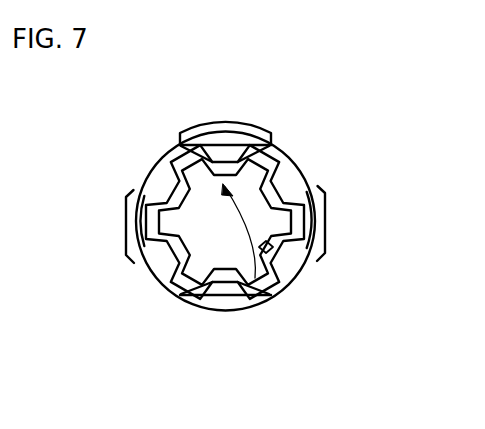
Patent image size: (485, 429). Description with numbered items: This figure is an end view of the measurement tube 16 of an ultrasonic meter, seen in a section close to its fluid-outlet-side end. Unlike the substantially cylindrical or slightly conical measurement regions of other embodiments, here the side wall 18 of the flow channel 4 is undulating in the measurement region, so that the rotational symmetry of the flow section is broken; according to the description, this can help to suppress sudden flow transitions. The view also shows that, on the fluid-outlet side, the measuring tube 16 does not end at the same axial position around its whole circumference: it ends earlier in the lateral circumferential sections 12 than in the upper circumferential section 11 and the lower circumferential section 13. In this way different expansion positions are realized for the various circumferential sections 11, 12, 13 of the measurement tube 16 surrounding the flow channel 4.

The flow channel 4 is at (220, 243).
The upper circumferential section 11 is at (262, 158).
The lateral circumferential sections 12 is at (291, 212).
The lower circumferential section 13 is at (255, 278).
The measurement tube 16 is at (314, 141).
The side wall 18 is at (269, 248).